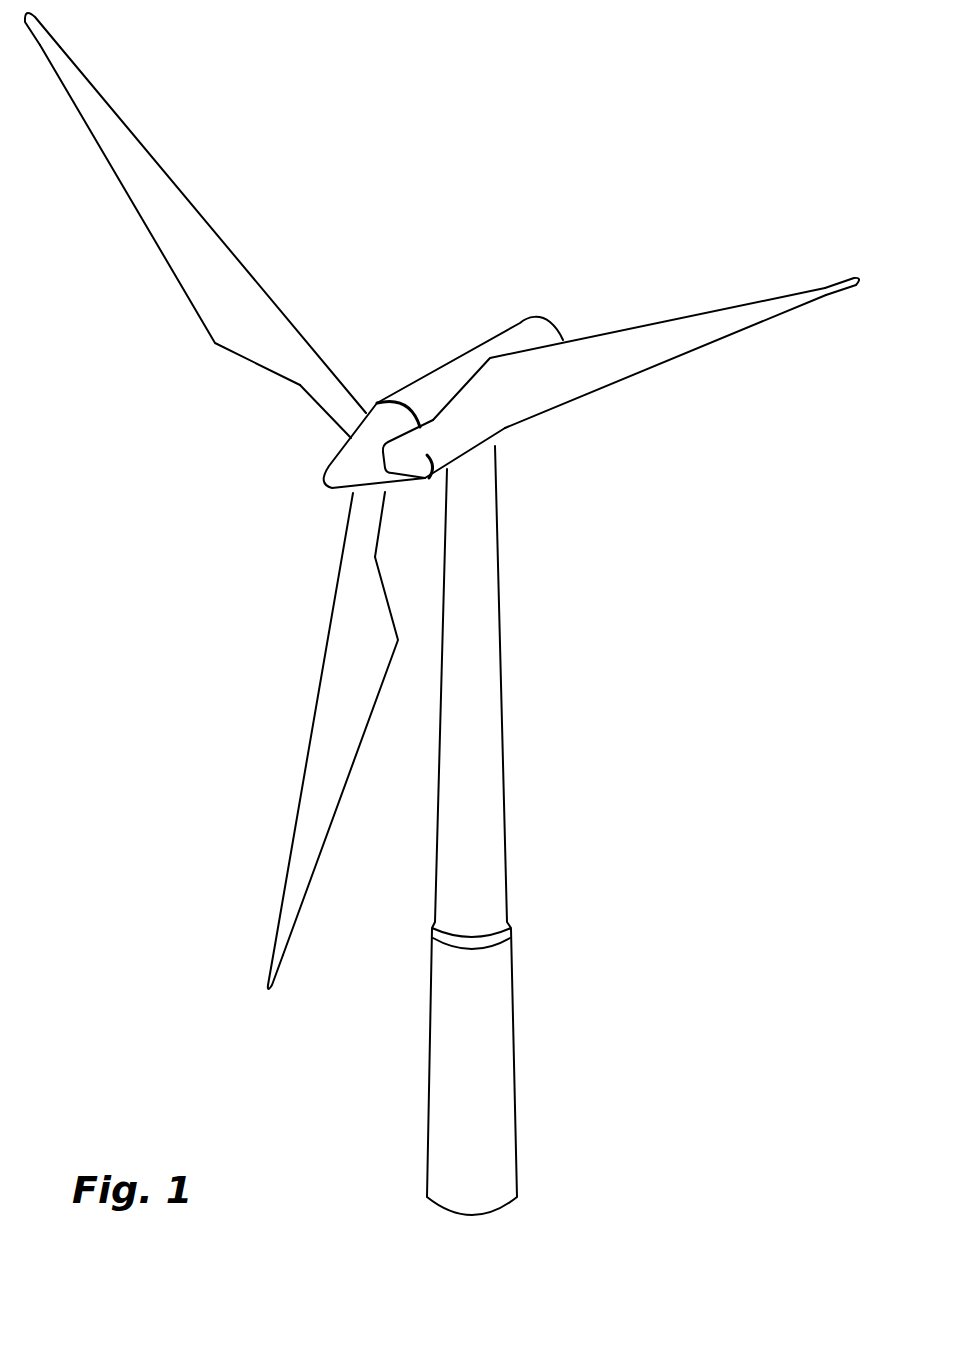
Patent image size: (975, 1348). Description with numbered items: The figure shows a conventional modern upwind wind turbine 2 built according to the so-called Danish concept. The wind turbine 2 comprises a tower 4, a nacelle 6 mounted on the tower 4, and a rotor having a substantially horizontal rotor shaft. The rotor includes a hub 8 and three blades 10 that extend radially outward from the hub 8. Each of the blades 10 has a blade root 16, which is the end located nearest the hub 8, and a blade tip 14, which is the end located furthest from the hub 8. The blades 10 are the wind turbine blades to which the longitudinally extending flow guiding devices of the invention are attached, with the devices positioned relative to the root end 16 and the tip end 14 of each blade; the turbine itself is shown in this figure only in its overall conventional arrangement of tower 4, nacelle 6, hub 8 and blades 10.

The wind turbine 2 is at (597, 764).
The tower 4 is at (490, 685).
The nacelle 6 is at (435, 384).
The hub 8 is at (342, 468).
The wind turbine blade 10 is at (228, 315).
The blade tip 14 is at (68, 72).
The blade root 16 is at (350, 422).